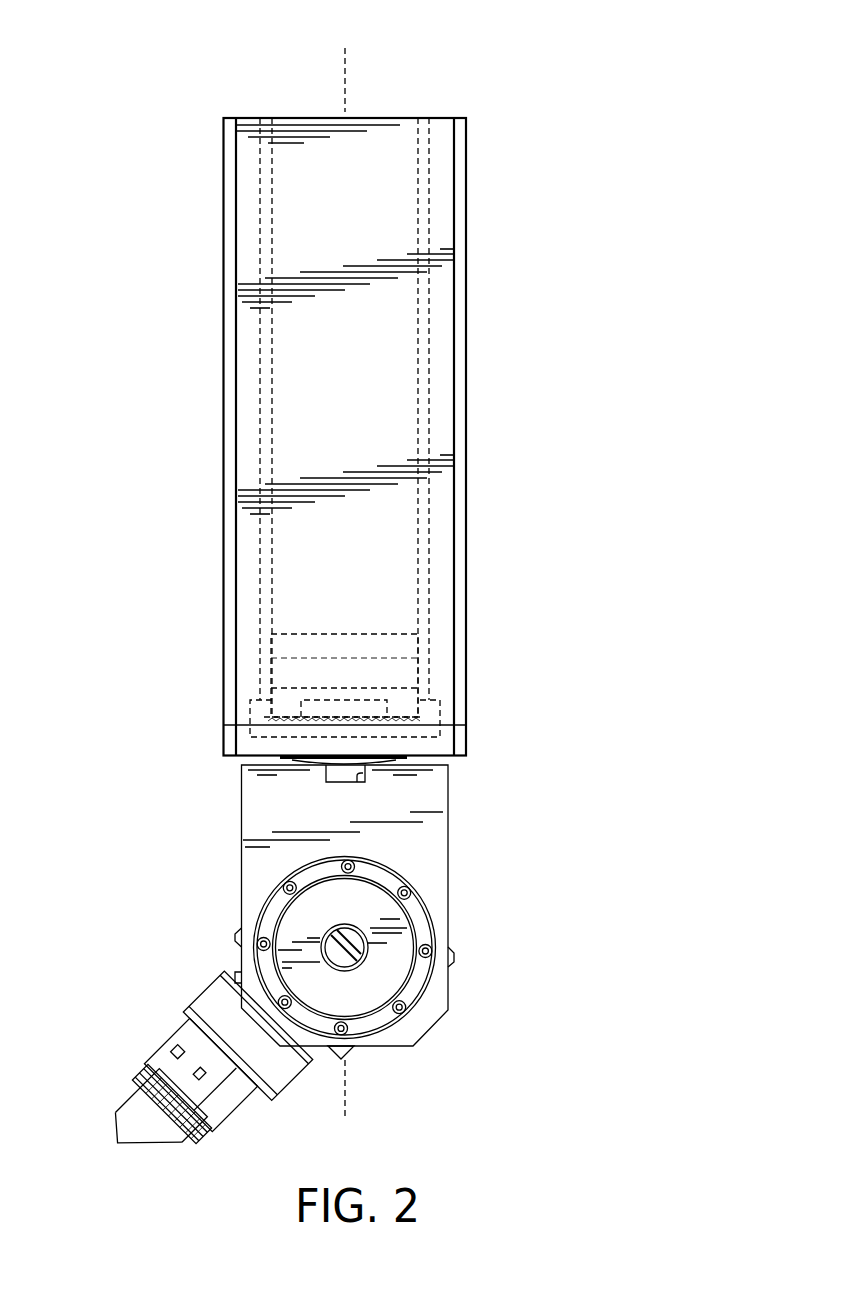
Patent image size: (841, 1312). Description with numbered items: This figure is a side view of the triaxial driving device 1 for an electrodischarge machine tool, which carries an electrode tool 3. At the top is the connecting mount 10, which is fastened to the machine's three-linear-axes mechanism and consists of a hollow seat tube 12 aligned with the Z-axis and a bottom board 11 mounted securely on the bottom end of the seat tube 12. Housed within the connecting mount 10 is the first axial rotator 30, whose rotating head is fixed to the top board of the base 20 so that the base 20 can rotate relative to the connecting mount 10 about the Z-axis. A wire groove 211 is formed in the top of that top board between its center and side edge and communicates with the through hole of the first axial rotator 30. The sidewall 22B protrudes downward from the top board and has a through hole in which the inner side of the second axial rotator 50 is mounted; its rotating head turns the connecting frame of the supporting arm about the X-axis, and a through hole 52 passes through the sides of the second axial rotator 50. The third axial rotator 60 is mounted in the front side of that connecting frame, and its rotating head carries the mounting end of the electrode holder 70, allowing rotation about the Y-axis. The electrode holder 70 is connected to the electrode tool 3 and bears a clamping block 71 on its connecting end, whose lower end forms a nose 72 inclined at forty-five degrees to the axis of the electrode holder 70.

The triaxial driving device 1 is at (480, 270).
The electrode tool 3 is at (345, 48).
The connecting mount 10 is at (470, 494).
The bottom board 11 is at (443, 744).
The seat tube 12 is at (443, 410).
The base 20 is at (240, 802).
The wire groove 211 is at (363, 777).
The sidewall 22B is at (428, 848).
The first axial rotator 30 is at (333, 622).
The second axial rotator 50 is at (423, 1008).
The through hole 52 is at (343, 940).
The third axial rotator 60 is at (338, 1064).
The electrode holder 70 is at (125, 1095).
The clamping block 71 is at (175, 1128).
The nose 72 is at (118, 1137).